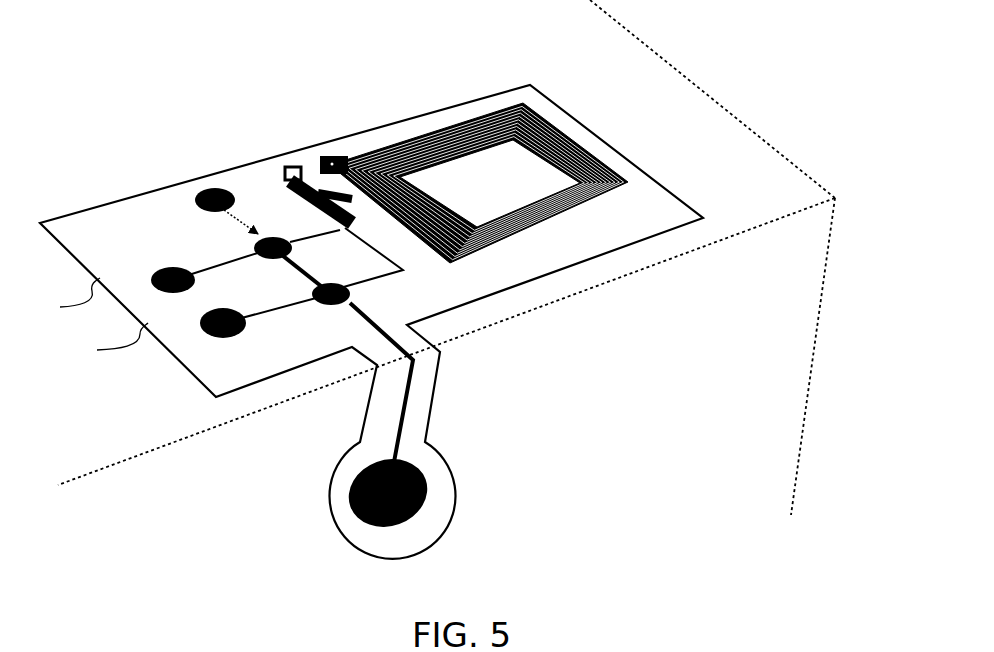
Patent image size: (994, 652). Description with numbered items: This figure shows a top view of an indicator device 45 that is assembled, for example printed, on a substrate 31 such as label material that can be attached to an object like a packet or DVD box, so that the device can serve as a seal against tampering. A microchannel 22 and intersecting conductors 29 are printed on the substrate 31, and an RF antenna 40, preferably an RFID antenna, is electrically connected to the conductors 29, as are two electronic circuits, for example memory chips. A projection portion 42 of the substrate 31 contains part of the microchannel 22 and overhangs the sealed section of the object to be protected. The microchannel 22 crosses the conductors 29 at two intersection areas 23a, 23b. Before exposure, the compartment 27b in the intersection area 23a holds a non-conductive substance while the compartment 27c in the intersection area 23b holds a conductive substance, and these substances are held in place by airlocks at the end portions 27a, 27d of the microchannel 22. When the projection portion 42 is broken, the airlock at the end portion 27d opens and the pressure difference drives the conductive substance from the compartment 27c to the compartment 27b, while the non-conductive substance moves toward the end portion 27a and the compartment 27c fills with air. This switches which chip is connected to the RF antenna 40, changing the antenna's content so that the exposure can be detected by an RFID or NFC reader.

The indicator device 45 is at (157, 97).
The substrate 31 is at (373, 131).
The RF antenna 40 is at (547, 118).
The end portion 27a is at (212, 188).
The compartment 27b is at (287, 261).
The compartment 27c is at (347, 311).
The end portion 27d is at (400, 407).
The intersection area 23a is at (247, 243).
The intersection area 23b is at (318, 307).
The conductors 29 is at (313, 236).
The microchannel 22 is at (418, 370).
The projection portion 42 is at (333, 487).